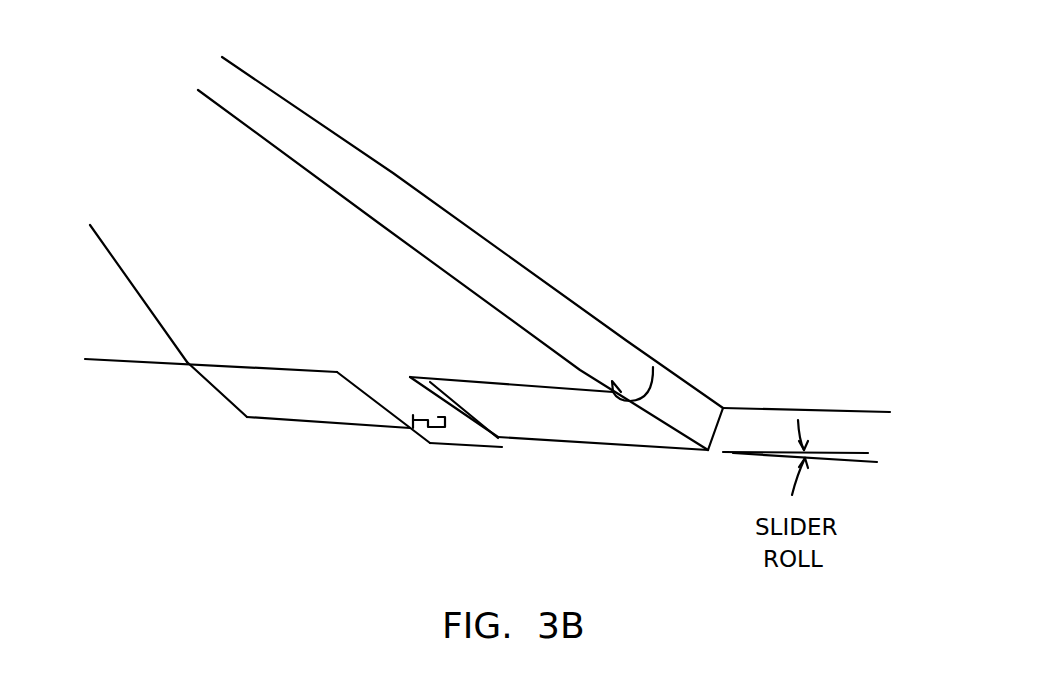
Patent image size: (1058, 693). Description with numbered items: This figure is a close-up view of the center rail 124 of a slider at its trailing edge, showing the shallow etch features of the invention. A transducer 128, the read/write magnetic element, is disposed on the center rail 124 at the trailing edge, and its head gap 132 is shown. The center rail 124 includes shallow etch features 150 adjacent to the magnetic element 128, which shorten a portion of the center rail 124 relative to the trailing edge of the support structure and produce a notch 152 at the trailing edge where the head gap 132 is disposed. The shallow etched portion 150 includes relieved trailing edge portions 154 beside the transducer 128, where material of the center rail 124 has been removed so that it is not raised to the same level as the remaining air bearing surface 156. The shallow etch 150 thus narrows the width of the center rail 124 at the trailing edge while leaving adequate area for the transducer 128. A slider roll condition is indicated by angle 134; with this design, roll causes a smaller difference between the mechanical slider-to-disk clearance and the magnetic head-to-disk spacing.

The center rail 124 is at (393, 172).
The remaining air bearing surface 156 is at (408, 328).
The shallow etch features 150 is at (653, 367).
The transducer 128 is at (465, 447).
The relieved trailing edge portions 154 is at (262, 400).
The head gap 132 is at (413, 421).
The notch 152 is at (497, 437).
The angle 134 is at (875, 458).